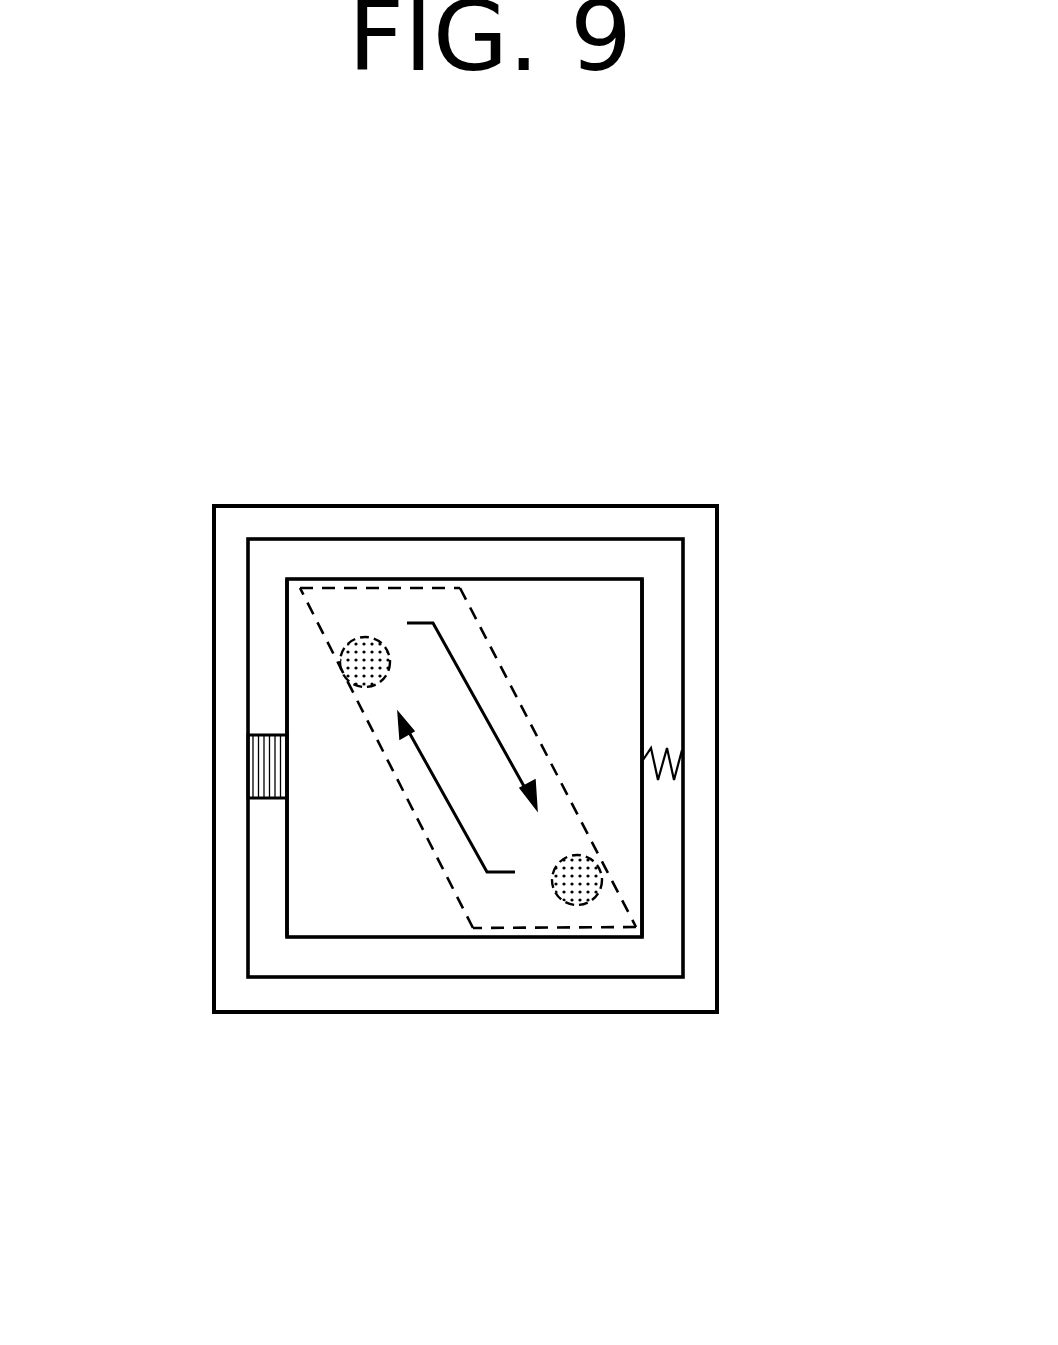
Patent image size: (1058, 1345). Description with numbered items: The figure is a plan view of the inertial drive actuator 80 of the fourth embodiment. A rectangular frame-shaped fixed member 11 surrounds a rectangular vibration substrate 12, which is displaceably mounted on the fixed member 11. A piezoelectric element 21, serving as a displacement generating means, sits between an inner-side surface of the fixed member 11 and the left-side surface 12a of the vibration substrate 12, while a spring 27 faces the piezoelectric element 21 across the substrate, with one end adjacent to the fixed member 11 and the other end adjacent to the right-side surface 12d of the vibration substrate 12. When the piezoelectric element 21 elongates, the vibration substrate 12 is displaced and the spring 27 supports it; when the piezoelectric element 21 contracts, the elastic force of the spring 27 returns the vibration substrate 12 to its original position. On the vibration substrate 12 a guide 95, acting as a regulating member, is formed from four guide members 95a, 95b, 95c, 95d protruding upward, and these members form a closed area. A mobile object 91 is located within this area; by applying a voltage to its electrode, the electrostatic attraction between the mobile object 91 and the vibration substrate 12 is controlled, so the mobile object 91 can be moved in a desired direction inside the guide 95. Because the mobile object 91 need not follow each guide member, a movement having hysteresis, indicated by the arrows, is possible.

The fixed member 11 is at (702, 585).
The vibration substrate 12 is at (537, 608).
The left-side surface of the vibration substrate 12a is at (287, 667).
The right-side surface of the vibration substrate 12d is at (643, 865).
The piezoelectric element 21 is at (270, 766).
The spring 27 is at (683, 758).
The inertial drive actuator 80 is at (486, 839).
The mobile object 91 is at (362, 636).
The guide 95 is at (611, 738).
The guide member 95a is at (423, 830).
The guide member 95b is at (401, 588).
The guide member 95c is at (577, 809).
The guide member 95d is at (555, 928).